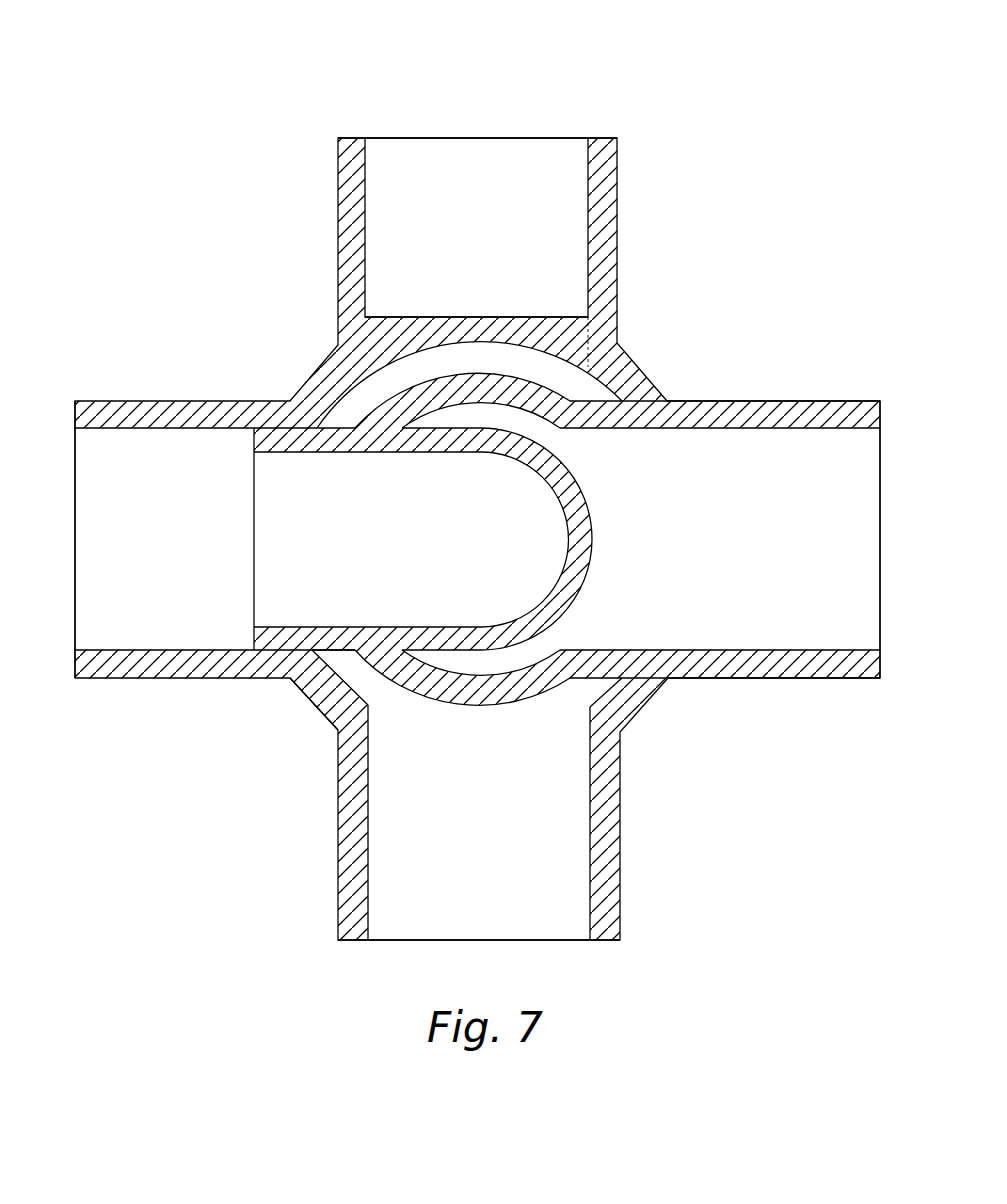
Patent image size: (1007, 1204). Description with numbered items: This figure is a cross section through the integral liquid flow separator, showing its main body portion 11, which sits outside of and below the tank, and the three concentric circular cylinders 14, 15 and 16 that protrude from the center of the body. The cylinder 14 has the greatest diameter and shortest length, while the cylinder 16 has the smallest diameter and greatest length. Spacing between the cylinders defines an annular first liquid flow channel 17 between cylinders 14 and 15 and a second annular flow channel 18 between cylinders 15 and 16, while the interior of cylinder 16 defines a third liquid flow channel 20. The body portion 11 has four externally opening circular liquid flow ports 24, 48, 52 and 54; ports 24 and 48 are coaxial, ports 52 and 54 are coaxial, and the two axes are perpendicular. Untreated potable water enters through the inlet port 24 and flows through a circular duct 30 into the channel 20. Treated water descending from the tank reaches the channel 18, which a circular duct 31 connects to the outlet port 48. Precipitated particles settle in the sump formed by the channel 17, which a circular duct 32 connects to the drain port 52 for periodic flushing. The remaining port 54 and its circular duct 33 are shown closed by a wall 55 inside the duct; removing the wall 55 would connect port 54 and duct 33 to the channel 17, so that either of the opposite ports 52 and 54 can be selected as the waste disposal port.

The main body portion 11 is at (309, 378).
The cylinder 14 is at (320, 706).
The cylinder 15 is at (527, 703).
The cylinder 16 is at (592, 548).
The first liquid flow channel 17 is at (358, 664).
The second annular flow channel 18 is at (553, 443).
The third liquid flow channel 20 is at (411, 539).
The inlet port 24 is at (78, 660).
The circular duct 30 is at (176, 649).
The circular duct 31 is at (757, 430).
The circular duct 32 is at (368, 846).
The circular duct 33 is at (367, 190).
The outlet port 48 is at (880, 412).
The drain port 52 is at (340, 942).
The port 54 is at (344, 137).
The wall 55 is at (417, 317).